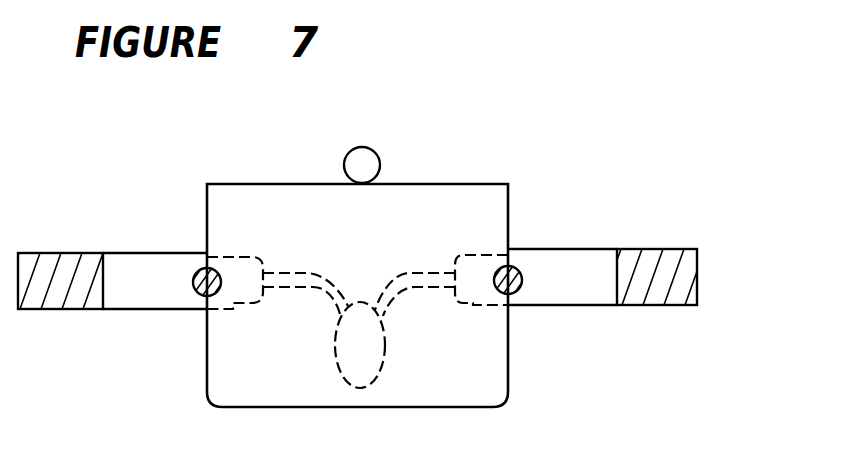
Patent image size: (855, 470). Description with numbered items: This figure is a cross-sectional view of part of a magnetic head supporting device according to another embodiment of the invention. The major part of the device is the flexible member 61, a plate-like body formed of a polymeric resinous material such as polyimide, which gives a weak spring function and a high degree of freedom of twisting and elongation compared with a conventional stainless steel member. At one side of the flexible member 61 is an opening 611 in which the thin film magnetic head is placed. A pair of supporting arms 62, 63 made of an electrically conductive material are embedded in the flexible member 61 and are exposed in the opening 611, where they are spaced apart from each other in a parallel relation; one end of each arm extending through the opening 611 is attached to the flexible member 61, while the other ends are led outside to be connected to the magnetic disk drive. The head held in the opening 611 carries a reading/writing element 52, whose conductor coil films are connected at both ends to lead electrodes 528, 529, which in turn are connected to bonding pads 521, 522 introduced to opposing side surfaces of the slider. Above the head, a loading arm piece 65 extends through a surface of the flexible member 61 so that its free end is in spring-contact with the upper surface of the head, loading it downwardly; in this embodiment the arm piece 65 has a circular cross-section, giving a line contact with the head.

The flexible member 61 is at (62, 279).
The opening 611 is at (538, 273).
The supporting arm 62 is at (196, 288).
The supporting arm 63 is at (518, 290).
The loading arm piece 65 is at (360, 169).
The bonding pad 521 is at (233, 303).
The lead electrode 528 is at (272, 288).
The reading/writing element 52 is at (336, 355).
The lead electrode 529 is at (413, 290).
The bonding pad 522 is at (470, 304).